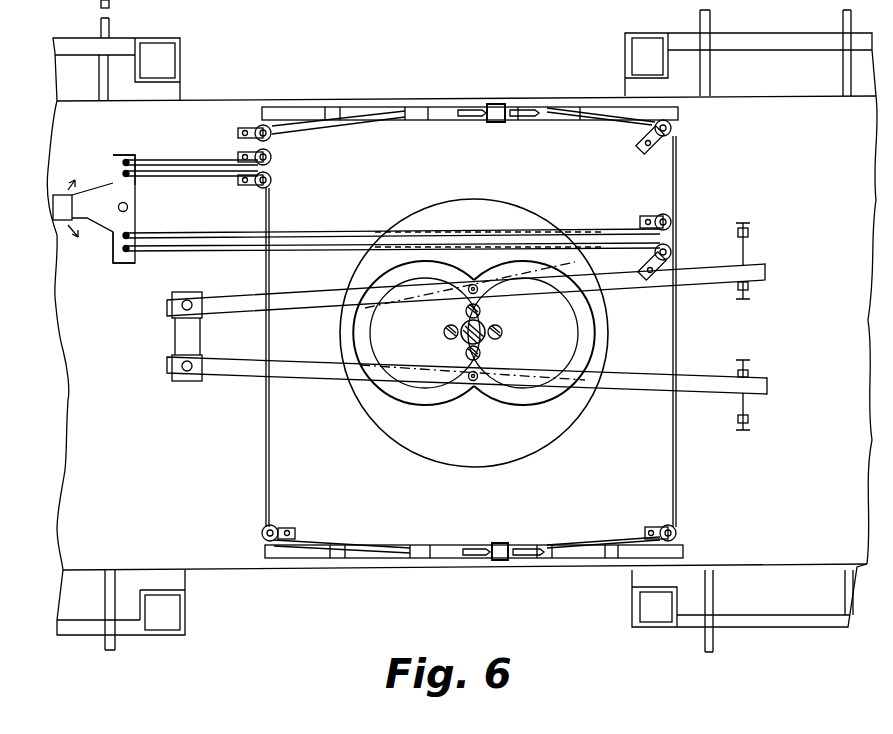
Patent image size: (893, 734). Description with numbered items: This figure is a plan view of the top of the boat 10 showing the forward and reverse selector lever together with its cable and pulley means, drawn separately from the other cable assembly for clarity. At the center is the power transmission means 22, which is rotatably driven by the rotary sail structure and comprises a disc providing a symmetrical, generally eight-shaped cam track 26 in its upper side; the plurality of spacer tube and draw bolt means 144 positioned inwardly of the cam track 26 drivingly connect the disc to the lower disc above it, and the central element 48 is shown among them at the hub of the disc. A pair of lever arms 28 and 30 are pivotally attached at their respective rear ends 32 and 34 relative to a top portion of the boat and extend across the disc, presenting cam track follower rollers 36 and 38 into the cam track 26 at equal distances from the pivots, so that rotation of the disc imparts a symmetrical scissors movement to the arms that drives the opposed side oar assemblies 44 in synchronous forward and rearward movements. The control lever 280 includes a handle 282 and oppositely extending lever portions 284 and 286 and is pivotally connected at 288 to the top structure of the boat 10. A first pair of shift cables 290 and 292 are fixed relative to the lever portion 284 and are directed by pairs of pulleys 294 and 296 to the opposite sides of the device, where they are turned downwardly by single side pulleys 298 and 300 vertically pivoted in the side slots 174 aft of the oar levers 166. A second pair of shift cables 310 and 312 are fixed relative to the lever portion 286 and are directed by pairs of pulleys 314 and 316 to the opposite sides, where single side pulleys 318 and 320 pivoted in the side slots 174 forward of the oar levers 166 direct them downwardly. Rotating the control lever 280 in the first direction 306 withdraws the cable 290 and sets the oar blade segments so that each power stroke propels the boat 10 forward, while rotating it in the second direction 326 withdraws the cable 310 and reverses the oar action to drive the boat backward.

The boat 10 is at (247, 100).
The power transmission means 22 is at (540, 200).
The cam track 26 is at (593, 334).
The lever arm 28 is at (325, 367).
The lever arm 30 is at (333, 303).
The rear end pivot 32 is at (186, 374).
The rear end pivot 34 is at (187, 300).
The cam track follower roller 36 is at (472, 382).
The cam track follower roller 38 is at (473, 284).
The side oar assembly 44 is at (186, 636).
The central hub 48 is at (486, 328).
The spacer tube and draw bolt means 144 is at (457, 334).
The oar lever 166 is at (497, 103).
The side slot 174 is at (295, 106).
The control lever 280 is at (140, 218).
The handle 282 is at (75, 205).
The lever portion 284 is at (130, 155).
The lever portion 286 is at (115, 264).
The pivotal connection 288 is at (129, 207).
The shift cable 290 is at (273, 221).
The shift cable 292 is at (232, 162).
The pulley 294 is at (275, 180).
The pulley 296 is at (277, 157).
The single side pulley 298 is at (393, 557).
The single side pulley 300 is at (386, 108).
The first direction 306 is at (68, 225).
The shift cable 310 is at (345, 253).
The shift cable 312 is at (372, 231).
The pulley 314 is at (672, 253).
The pulley 316 is at (672, 129).
The single side pulley 318 is at (552, 547).
The single side pulley 320 is at (543, 124).
The second direction 326 is at (68, 190).